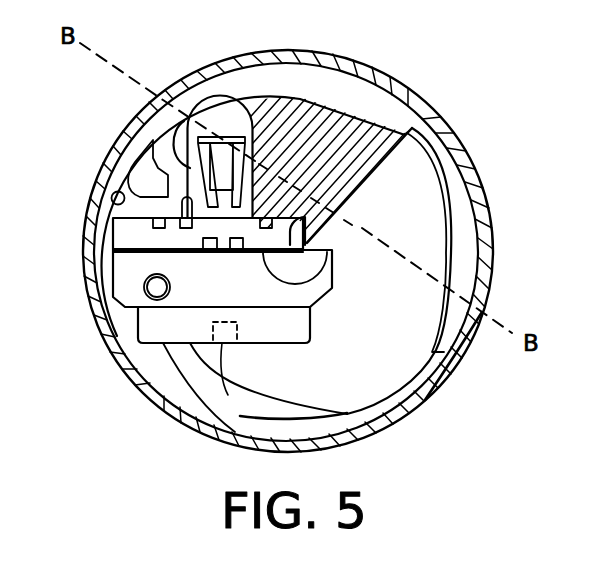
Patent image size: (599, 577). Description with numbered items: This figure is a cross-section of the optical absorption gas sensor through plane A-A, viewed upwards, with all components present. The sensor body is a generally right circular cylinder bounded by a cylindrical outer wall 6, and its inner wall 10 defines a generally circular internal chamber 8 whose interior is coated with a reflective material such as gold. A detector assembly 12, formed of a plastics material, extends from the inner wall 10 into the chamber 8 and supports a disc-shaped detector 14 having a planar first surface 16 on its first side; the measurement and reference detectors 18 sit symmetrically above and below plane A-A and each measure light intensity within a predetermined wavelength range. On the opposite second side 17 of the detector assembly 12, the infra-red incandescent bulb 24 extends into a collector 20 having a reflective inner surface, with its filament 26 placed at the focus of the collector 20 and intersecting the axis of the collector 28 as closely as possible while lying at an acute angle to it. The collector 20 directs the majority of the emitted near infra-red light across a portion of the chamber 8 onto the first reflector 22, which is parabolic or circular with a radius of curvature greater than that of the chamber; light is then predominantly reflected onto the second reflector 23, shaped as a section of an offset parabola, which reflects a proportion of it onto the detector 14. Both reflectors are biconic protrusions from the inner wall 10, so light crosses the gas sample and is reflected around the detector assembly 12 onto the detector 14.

The cylindrical outer wall 6 is at (381, 70).
The internal chamber 8 is at (418, 380).
The inner wall 10 is at (438, 135).
The detector assembly 12 is at (197, 275).
The detector 14 is at (147, 323).
The planar first surface 16 is at (228, 395).
The second side 17 is at (148, 173).
The measurement and reference detectors 18 is at (262, 345).
The collector 20 is at (281, 105).
The first reflector 22 is at (458, 215).
The second reflector 23 is at (207, 385).
The incandescent bulb 24 is at (212, 97).
The filament 26 is at (181, 130).
The axis of the collector 28 is at (490, 320).